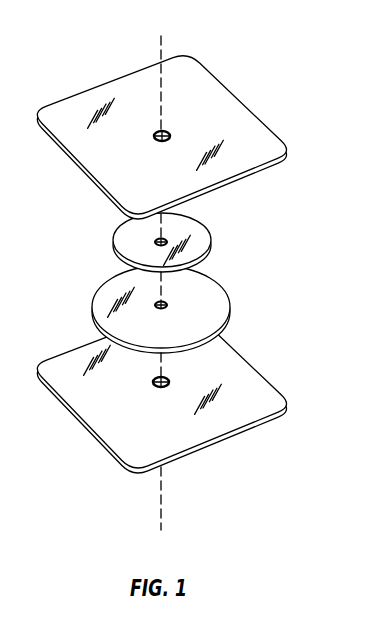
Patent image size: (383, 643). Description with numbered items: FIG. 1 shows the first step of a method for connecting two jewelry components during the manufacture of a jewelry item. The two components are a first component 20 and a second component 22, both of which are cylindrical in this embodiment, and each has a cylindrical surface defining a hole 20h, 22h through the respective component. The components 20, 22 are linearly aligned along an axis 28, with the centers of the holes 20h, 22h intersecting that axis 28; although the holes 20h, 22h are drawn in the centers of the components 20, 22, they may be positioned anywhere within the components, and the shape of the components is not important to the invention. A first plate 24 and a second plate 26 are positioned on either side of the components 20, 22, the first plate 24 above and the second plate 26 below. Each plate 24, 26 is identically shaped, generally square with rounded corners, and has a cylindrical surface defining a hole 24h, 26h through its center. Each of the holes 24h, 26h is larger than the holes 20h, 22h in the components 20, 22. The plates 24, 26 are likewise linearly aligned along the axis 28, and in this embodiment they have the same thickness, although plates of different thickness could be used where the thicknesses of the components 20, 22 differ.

The first component 20 is at (205, 233).
The hole 20h is at (153, 242).
The second component 22 is at (212, 286).
The hole 22h is at (170, 306).
The first plate 24 is at (221, 100).
The hole 24h is at (153, 137).
The second plate 26 is at (236, 363).
The hole 26h is at (153, 382).
The axis 28 is at (160, 34).